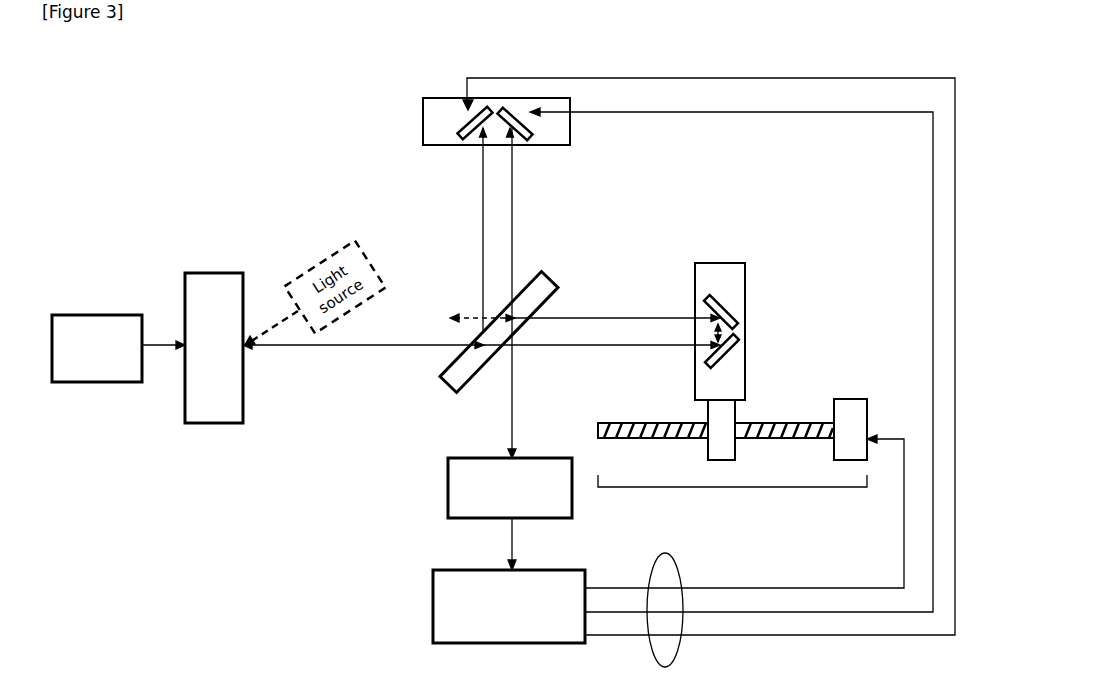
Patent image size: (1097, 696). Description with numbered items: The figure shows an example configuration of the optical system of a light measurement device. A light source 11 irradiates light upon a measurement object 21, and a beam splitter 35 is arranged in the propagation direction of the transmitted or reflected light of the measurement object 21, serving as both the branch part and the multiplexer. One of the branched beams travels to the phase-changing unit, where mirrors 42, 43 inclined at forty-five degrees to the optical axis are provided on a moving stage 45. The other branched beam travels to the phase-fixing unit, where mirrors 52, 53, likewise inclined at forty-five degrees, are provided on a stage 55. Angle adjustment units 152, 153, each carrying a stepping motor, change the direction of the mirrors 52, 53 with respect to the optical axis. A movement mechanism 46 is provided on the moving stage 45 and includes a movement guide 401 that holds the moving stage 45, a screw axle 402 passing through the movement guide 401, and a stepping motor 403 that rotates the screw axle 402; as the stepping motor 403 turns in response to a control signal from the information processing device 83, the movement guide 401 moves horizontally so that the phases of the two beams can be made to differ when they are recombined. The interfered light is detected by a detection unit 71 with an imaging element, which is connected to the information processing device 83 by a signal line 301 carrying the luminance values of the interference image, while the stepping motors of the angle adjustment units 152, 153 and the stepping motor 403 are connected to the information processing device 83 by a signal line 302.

The light source 11 is at (112, 315).
The measurement object 21 is at (212, 273).
The beam splitter 35 is at (548, 275).
The moving stage 45 is at (700, 263).
The mirror 43 is at (740, 304).
The mirror 42 is at (741, 345).
The stage 55 is at (423, 112).
The mirror 53 is at (468, 138).
The mirror 52 is at (523, 138).
The angle adjustment unit 153 is at (461, 109).
The angle adjustment unit 152 is at (541, 118).
The detection unit 71 is at (448, 476).
The signal line 301 is at (508, 538).
The information processing device 83 is at (432, 604).
The signal line 302 is at (648, 570).
The movement guide 401 is at (708, 460).
The screw axle 402 is at (808, 423).
The stepping motor 403 is at (834, 460).
The movement mechanism 46 is at (732, 478).